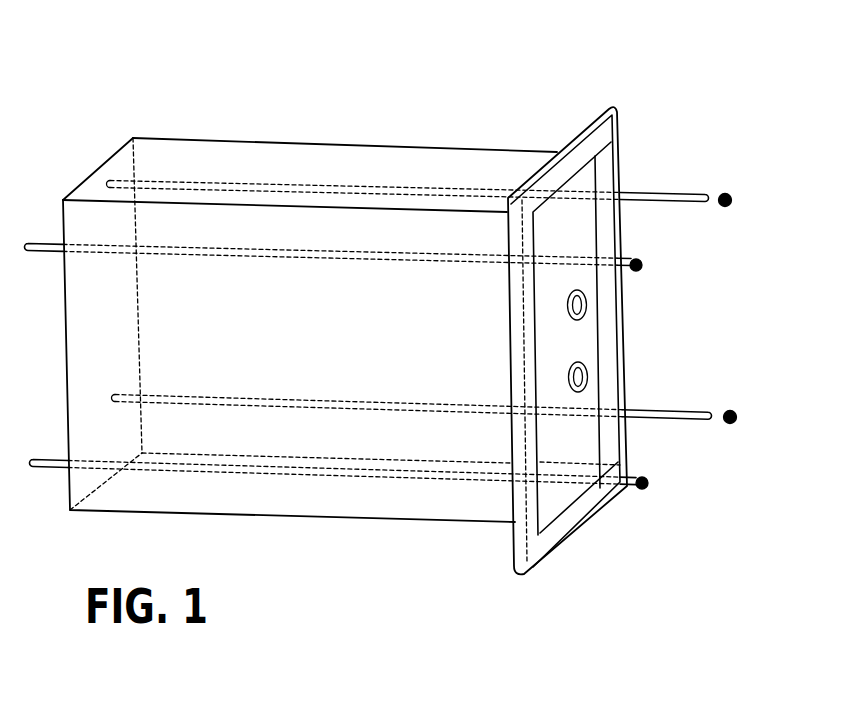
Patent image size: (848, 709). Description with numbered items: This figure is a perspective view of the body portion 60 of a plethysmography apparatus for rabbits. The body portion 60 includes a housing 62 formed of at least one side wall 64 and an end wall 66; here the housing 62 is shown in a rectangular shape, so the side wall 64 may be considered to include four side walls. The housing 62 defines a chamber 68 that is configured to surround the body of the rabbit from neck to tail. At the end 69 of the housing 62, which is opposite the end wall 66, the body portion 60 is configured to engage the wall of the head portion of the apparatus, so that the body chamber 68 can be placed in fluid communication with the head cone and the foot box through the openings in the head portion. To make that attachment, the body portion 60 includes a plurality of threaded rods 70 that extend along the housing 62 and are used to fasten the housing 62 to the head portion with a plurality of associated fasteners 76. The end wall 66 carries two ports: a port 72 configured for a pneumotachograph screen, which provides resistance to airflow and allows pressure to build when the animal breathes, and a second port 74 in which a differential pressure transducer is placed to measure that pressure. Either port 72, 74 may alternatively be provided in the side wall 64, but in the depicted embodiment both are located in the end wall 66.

The body portion 60 is at (641, 68).
The housing 62 is at (307, 143).
The side wall 64 is at (453, 160).
The end wall 66 is at (582, 337).
The chamber 68 is at (377, 330).
The end 69 is at (93, 172).
The threaded rods 70 is at (568, 255).
The port 72 is at (586, 372).
The second port 74 is at (585, 303).
The fasteners 76 is at (725, 193).